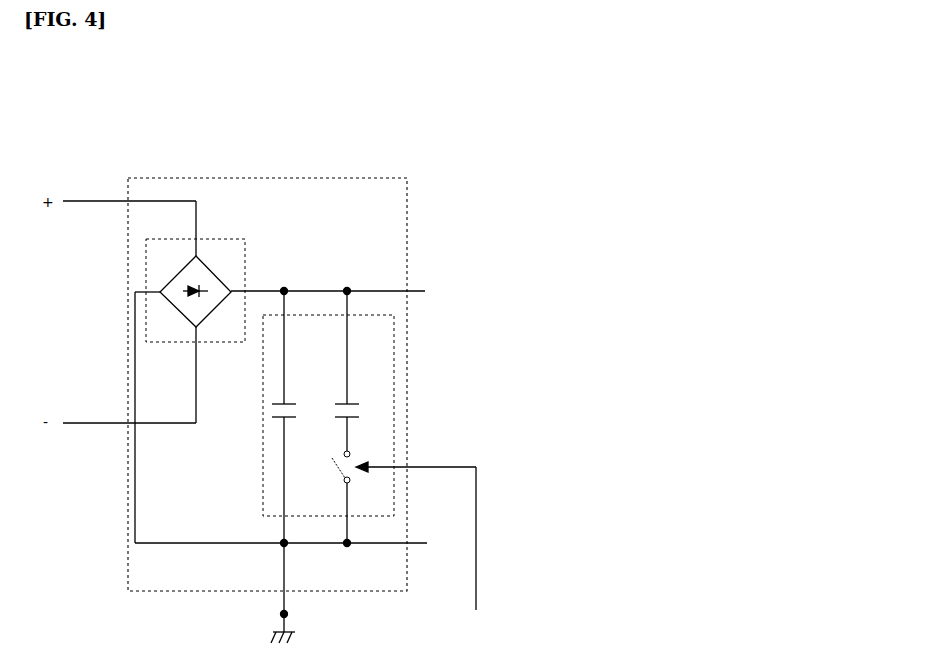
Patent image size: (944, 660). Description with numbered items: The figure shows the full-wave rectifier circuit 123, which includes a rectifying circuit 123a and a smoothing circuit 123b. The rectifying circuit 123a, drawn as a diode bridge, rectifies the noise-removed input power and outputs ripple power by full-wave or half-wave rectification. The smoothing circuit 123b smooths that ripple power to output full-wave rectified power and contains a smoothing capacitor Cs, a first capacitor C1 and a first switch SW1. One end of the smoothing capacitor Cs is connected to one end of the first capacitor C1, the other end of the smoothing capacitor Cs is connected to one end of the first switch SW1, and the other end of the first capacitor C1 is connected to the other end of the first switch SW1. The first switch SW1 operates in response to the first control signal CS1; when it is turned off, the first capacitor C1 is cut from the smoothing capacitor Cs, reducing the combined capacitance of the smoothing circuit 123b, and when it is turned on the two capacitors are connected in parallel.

The full-wave rectifier circuit 123 is at (493, 136).
The rectifying circuit 123a is at (225, 239).
The smoothing circuit 123b is at (328, 396).
The smoothing capacitor Cs is at (290, 417).
The first capacitor C1 is at (355, 371).
The first switch SW1 is at (358, 497).
The first control signal CS1 is at (423, 551).